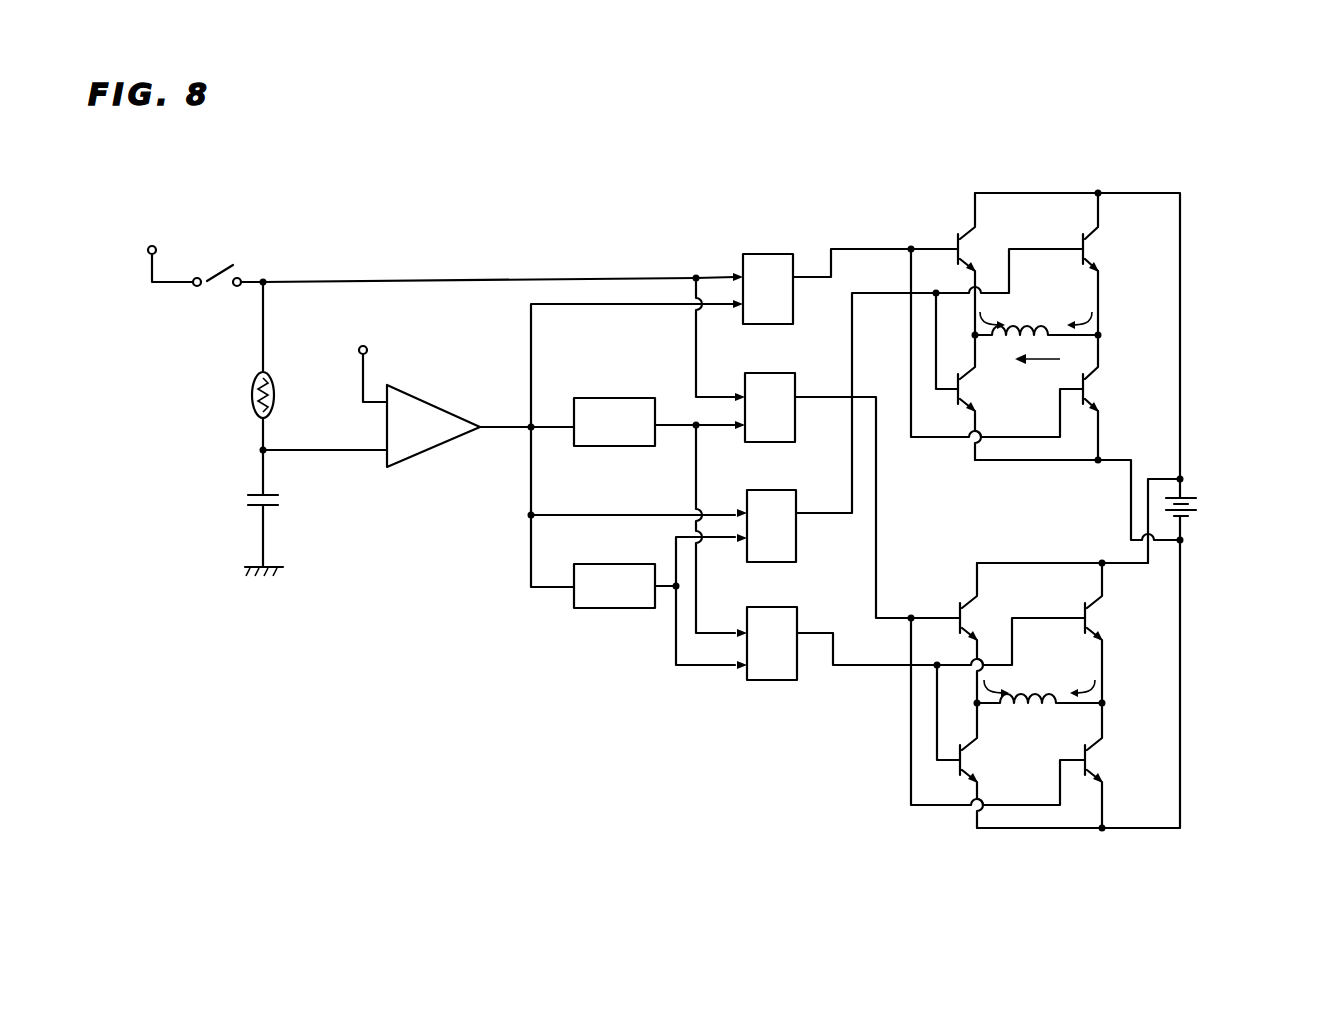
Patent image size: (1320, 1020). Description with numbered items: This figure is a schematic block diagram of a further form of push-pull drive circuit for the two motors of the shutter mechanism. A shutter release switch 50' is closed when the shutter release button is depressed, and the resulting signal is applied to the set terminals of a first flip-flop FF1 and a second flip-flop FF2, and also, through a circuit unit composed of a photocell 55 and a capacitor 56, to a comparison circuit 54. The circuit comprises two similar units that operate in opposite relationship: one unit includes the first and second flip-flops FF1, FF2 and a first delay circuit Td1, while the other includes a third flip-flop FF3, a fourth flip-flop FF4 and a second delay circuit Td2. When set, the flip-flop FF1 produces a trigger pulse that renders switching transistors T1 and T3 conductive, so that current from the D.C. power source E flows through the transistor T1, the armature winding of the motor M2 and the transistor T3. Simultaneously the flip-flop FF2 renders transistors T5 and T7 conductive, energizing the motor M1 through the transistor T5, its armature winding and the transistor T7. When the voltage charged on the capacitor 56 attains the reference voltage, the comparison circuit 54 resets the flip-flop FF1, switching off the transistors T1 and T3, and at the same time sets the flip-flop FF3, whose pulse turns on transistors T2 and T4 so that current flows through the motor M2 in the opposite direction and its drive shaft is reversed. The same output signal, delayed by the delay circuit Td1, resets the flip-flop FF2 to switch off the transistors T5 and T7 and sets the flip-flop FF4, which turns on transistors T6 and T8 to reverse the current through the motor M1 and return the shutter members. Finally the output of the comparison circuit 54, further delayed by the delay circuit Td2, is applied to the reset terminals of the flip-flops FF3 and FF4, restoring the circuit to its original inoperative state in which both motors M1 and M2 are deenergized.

The shutter release switch 50' is at (205, 247).
The photocell 55 is at (250, 396).
The capacitor 56 is at (252, 502).
The comparison circuit 54 is at (432, 455).
The first delay circuit Td1 is at (602, 397).
The second delay circuit Td2 is at (596, 564).
The first flip-flop FF1 is at (777, 254).
The second flip-flop FF2 is at (777, 373).
The third flip-flop FF3 is at (777, 490).
The fourth flip-flop FF4 is at (778, 607).
The switching transistor T1 is at (968, 243).
The switching transistor T2 is at (1093, 243).
The switching transistor T3 is at (1093, 390).
The switching transistor T4 is at (968, 390).
The switching transistor T5 is at (970, 612).
The switching transistor T6 is at (1097, 612).
The switching transistor T7 is at (1097, 760).
The switching transistor T8 is at (970, 762).
The motor M1 is at (1040, 695).
The motor M2 is at (1036, 325).
The D.C. power source E is at (1200, 505).